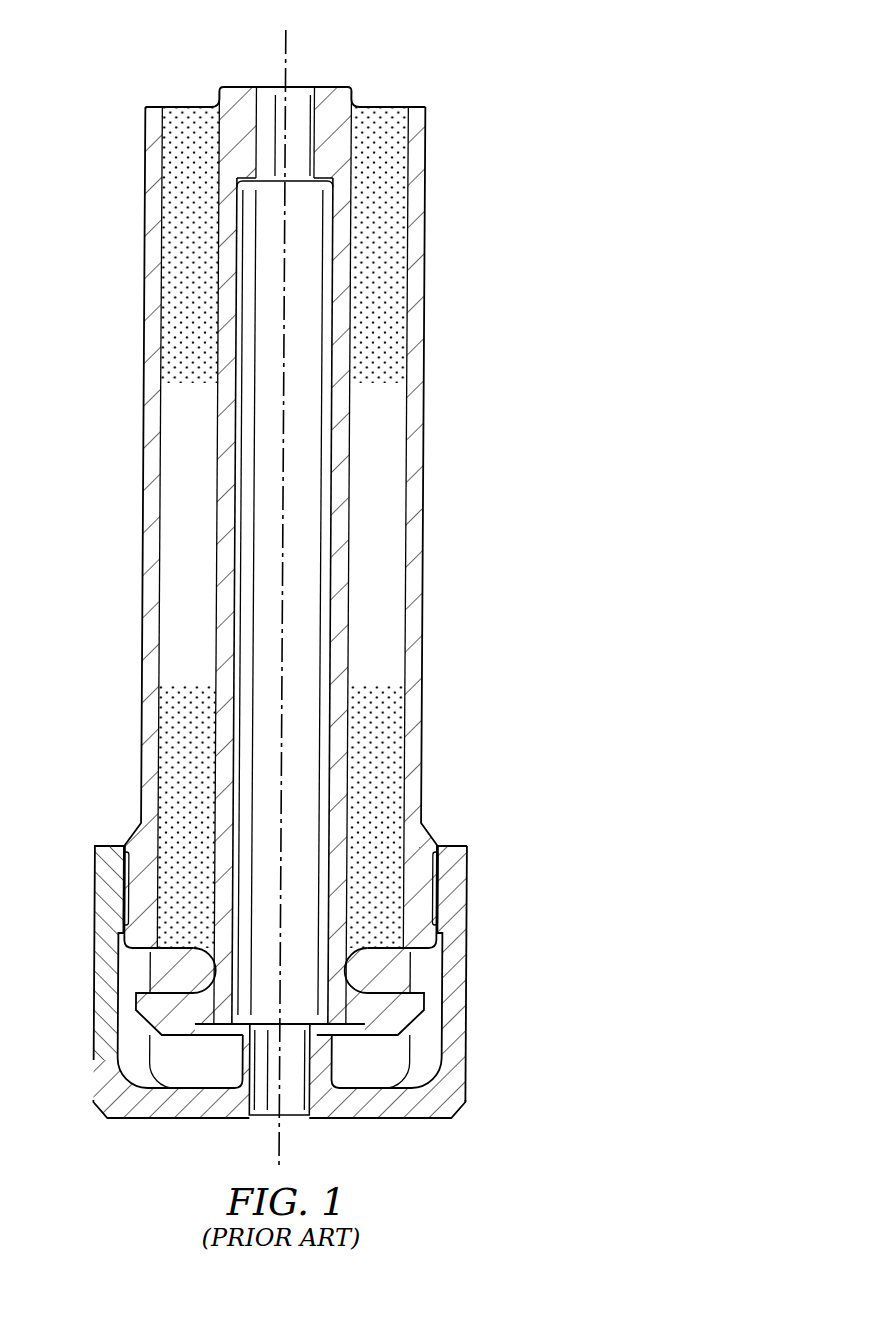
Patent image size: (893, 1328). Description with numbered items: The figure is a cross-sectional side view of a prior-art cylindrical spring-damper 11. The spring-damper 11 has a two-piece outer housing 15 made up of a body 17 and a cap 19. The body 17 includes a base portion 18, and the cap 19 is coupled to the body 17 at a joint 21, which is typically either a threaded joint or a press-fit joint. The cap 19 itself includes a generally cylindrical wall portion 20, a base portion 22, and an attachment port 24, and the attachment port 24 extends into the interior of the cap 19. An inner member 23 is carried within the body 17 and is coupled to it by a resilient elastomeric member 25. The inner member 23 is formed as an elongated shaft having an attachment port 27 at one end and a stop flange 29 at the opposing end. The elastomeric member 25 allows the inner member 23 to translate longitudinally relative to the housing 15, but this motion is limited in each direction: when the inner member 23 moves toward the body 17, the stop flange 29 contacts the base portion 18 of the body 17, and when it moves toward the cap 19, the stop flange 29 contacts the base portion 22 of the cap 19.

The spring-damper 11 is at (308, 587).
The outer housing 15 is at (434, 359).
The body 17 is at (428, 515).
The base portion 18 is at (411, 556).
The cap 19 is at (478, 1049).
The wall portion 20 is at (473, 933).
The joint 21 is at (446, 890).
The base portion 22 is at (395, 1120).
The inner member 23 is at (228, 86).
The attachment port 24 is at (272, 1096).
The resilient elastomeric member 25 is at (180, 532).
The attachment port 27 is at (266, 103).
The stop flange 29 is at (198, 1037).